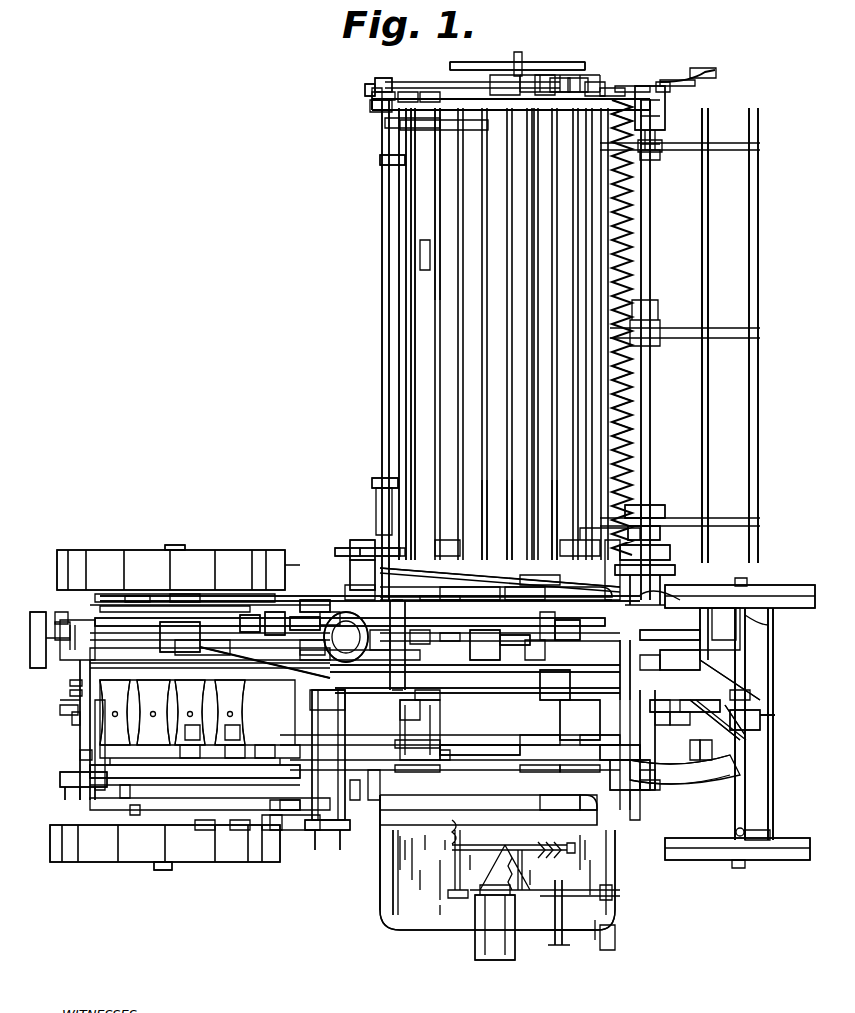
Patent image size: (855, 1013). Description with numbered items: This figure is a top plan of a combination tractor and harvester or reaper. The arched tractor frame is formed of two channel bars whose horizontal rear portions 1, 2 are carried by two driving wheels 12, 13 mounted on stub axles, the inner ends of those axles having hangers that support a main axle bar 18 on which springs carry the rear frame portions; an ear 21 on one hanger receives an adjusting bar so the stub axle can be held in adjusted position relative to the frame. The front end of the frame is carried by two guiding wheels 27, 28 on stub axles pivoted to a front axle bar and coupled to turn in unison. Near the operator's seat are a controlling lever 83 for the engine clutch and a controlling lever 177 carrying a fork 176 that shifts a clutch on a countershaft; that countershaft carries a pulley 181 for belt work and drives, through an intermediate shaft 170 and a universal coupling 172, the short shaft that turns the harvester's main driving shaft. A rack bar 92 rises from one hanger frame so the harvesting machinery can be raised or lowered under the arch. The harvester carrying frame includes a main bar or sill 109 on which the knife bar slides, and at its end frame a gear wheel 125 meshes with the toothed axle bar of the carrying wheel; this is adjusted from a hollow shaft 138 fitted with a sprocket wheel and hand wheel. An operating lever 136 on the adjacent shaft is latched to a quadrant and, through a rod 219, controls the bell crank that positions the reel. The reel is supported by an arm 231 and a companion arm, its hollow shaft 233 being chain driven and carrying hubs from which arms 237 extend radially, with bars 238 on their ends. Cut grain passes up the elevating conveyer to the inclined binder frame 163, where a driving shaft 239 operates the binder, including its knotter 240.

The horizontal rear portion 1 is at (125, 798).
The horizontal rear portion 2 is at (142, 620).
The driving wheel 13 is at (152, 550).
The guiding wheel 28 is at (798, 590).
The guiding wheel 27 is at (708, 860).
The binder frame 163 is at (398, 930).
The main bar or sill 109 is at (615, 250).
The hollow shaft 138 is at (383, 287).
The operating lever 136 is at (362, 610).
The pulley 181 is at (38, 612).
The driving wheel 12 is at (134, 862).
The bar 238 is at (705, 192).
The arm 237 is at (706, 520).
The hollow shaft 233 is at (651, 208).
The rack bar 92 is at (316, 746).
The universal coupling 172 is at (290, 668).
The main axle bar 18 is at (165, 766).
The ear 21 is at (198, 618).
The gear wheel 125 is at (480, 62).
The arm 231 is at (665, 96).
The fork 176 is at (116, 712).
The controlling lever 177 is at (151, 712).
The intermediate shaft 170 is at (188, 712).
The controlling lever 83 is at (229, 712).
The rod 219 is at (440, 578).
The knotter 240 is at (510, 930).
The driving shaft 239 is at (565, 920).